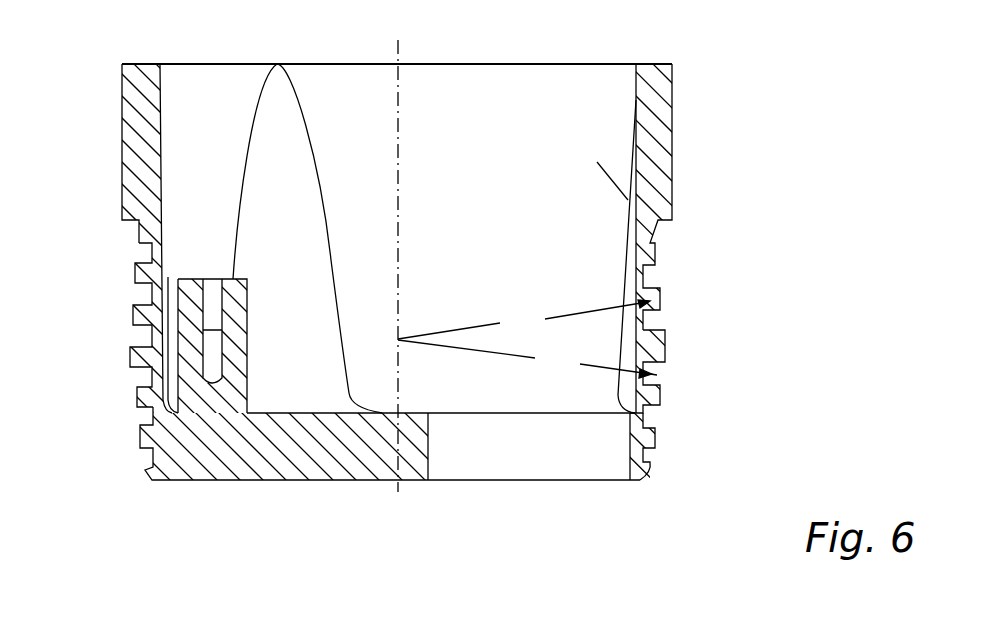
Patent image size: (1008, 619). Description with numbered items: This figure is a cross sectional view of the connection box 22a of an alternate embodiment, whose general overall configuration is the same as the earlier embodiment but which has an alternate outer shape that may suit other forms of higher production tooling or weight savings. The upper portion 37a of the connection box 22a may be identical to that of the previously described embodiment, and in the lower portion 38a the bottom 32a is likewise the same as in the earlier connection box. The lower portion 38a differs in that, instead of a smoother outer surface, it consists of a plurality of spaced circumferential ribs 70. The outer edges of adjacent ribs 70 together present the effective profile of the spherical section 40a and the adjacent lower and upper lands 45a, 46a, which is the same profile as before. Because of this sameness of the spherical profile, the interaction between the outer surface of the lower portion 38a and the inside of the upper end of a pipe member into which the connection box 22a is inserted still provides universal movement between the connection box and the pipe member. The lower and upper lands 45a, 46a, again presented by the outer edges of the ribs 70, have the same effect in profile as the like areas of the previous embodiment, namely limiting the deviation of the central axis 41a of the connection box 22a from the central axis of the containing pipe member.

The connection box 22a is at (683, 148).
The upper portion 37a is at (106, 116).
The circumferential ribs 70 is at (133, 398).
The lower portion 38a is at (118, 427).
The base wall 32a is at (270, 452).
The central axis 41a is at (399, 112).
The upper land 46a is at (660, 273).
The spherical section 40a is at (665, 338).
The lower land 45a is at (657, 438).